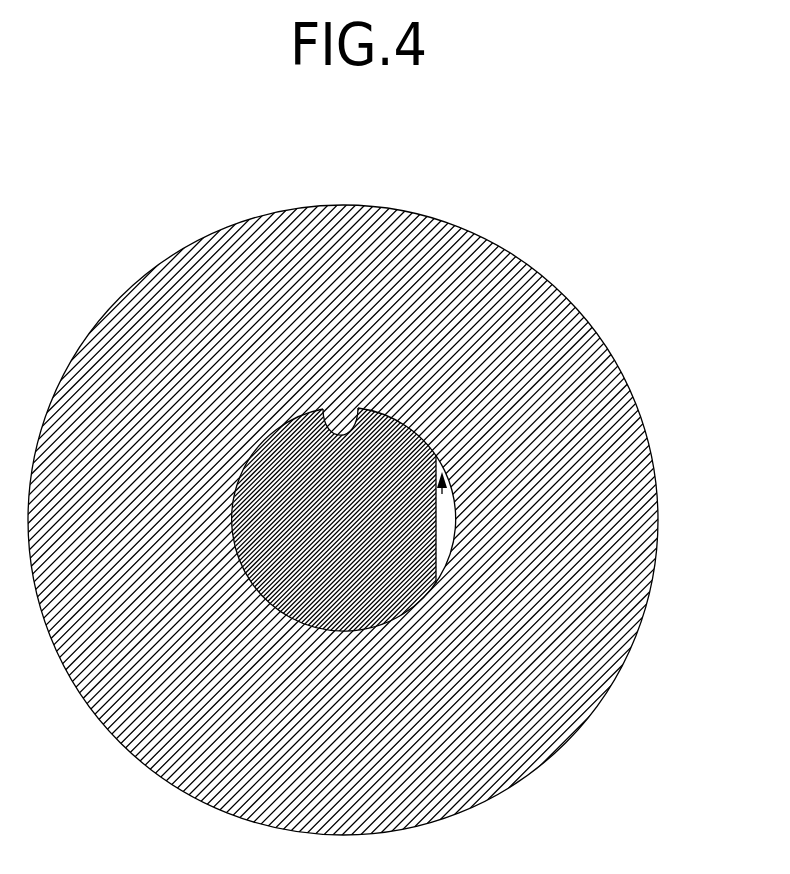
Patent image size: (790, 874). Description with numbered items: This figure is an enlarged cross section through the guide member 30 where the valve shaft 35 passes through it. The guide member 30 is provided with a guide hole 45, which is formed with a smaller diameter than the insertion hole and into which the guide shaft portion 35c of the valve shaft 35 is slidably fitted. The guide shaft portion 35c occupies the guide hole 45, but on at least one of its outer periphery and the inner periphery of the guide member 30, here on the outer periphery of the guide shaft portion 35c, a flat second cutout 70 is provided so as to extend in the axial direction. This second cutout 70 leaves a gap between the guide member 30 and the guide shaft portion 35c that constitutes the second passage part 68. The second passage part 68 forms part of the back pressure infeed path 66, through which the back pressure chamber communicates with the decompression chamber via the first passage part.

The guide member 30 is at (543, 298).
The valve shaft 35 is at (337, 646).
The guide shaft portion 35c is at (288, 600).
The guide hole 45 is at (357, 412).
The back pressure infeed path 66 is at (445, 490).
The second passage part 68 is at (445, 530).
The second cutout 70 is at (437, 552).